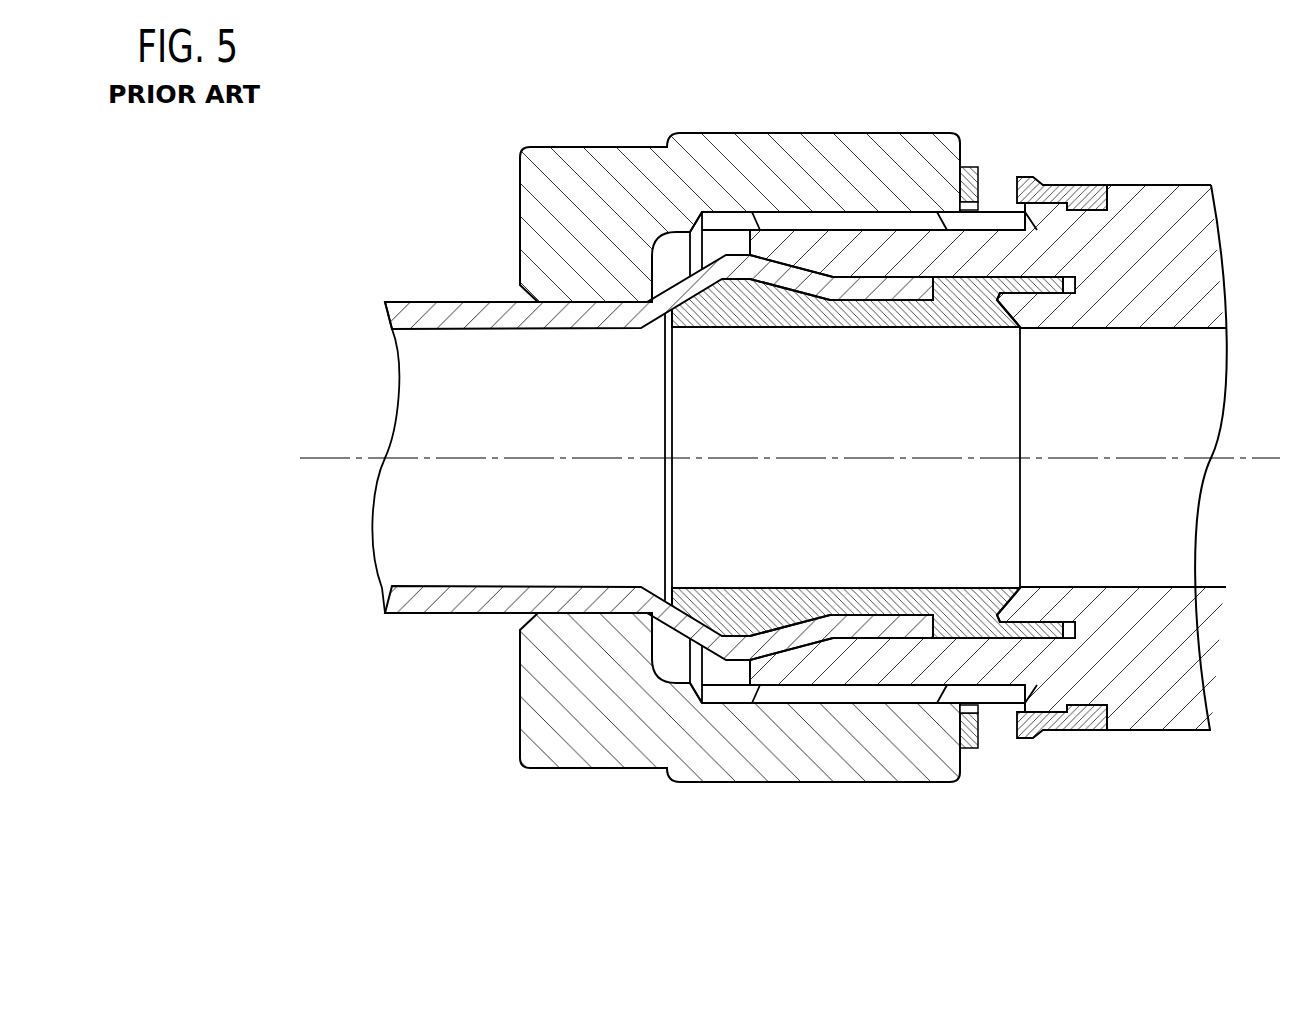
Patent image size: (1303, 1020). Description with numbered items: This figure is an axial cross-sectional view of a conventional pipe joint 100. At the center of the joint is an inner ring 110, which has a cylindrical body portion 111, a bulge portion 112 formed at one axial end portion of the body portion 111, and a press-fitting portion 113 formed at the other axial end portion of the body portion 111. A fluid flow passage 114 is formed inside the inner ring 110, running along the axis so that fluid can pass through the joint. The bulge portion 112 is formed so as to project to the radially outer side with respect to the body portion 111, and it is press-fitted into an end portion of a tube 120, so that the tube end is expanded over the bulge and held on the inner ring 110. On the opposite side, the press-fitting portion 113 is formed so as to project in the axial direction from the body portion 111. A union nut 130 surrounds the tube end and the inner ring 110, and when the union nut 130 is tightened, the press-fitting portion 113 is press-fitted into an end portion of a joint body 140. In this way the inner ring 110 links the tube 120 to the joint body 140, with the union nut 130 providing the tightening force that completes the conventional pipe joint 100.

The pipe joint 100 is at (428, 148).
The inner ring 110 is at (775, 585).
The body portion 111 is at (895, 602).
The bulge portion 112 is at (740, 625).
The press-fitting portion 113 is at (970, 615).
The fluid flow passage 114 is at (865, 445).
The tube 120 is at (455, 300).
The union nut 130 is at (598, 146).
The joint body 140 is at (1166, 184).